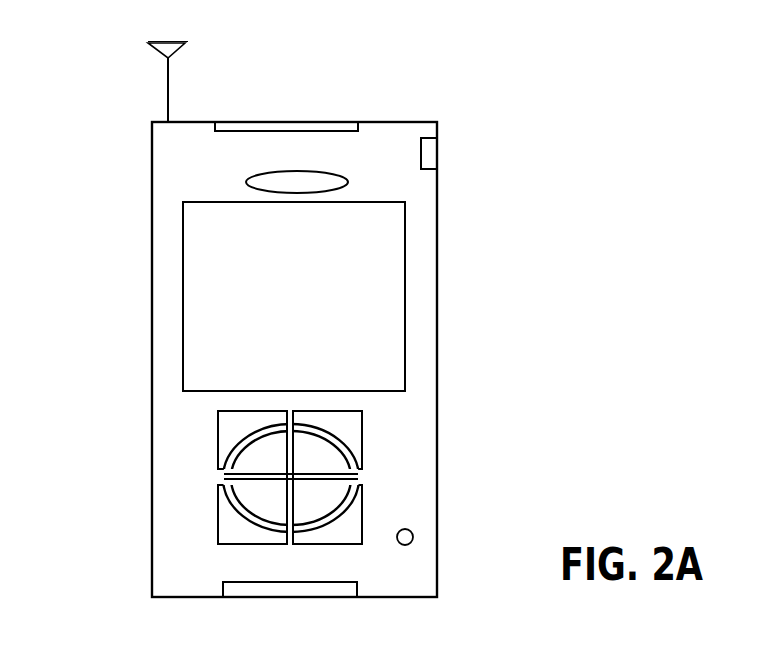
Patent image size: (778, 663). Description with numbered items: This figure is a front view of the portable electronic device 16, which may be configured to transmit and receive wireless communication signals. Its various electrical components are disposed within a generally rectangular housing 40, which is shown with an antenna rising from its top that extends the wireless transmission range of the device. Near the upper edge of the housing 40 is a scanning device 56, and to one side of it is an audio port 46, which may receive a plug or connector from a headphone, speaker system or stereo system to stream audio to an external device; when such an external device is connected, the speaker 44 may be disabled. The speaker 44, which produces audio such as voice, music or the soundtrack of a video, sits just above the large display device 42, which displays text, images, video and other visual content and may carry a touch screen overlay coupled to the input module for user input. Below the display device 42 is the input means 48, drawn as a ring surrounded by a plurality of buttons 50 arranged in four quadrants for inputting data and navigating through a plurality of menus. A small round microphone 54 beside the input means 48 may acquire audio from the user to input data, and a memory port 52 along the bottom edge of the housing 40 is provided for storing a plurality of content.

The portable electronic device 16 is at (339, 328).
The housing 40 is at (152, 152).
The display device 42 is at (405, 273).
The speaker 44 is at (298, 173).
The audio port 46 is at (439, 153).
The input means 48 is at (373, 483).
The buttons 50 is at (262, 453).
The memory port 52 is at (222, 588).
The microphone 54 is at (413, 537).
The scanning device 56 is at (317, 122).